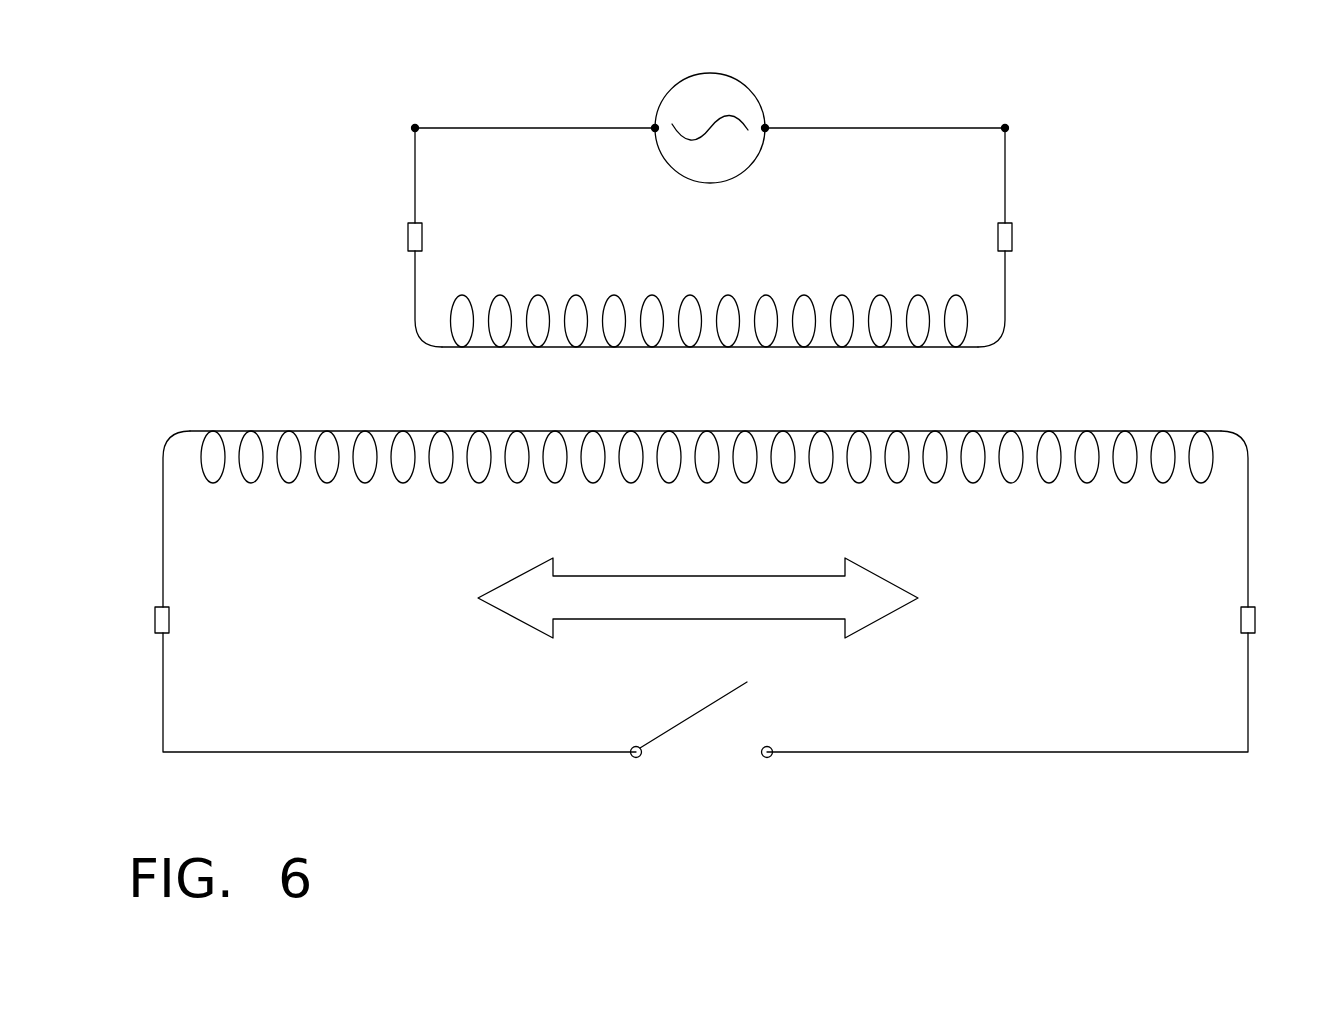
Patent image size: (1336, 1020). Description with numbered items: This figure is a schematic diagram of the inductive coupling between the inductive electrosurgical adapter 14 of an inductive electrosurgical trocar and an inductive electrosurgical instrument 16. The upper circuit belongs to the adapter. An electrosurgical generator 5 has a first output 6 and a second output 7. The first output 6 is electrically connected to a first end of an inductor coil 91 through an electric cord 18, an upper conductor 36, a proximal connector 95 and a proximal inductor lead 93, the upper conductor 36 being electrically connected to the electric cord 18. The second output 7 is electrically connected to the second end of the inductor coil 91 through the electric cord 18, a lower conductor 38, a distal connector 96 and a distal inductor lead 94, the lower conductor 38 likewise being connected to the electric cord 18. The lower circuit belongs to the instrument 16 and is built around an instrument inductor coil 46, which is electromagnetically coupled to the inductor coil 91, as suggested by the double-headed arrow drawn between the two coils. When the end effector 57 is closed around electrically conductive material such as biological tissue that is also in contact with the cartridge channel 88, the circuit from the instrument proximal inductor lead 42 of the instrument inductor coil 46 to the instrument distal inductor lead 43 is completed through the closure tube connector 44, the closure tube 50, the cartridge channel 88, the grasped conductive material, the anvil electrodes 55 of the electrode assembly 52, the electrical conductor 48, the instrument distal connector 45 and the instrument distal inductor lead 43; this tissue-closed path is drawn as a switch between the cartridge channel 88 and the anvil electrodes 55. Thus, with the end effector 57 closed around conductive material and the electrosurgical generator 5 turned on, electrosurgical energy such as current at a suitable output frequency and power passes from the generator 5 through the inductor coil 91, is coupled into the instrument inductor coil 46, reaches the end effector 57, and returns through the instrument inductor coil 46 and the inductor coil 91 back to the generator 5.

The inductive electrosurgical adapter 14 is at (1030, 57).
The inductive electrosurgical instrument 16 is at (1030, 791).
The electric cord 18 is at (537, 127).
The electrosurgical generator 5 is at (717, 88).
The first output 6 is at (768, 126).
The second output 7 is at (655, 126).
The upper conductor 36 is at (1005, 158).
The lower conductor 38 is at (415, 156).
The proximal connector 95 is at (1008, 242).
The distal connector 96 is at (410, 240).
The proximal inductor lead 93 is at (1005, 314).
The distal inductor lead 94 is at (415, 320).
The inductor coil 91 is at (597, 348).
The instrument inductor coil 46 is at (838, 432).
The instrument proximal inductor lead 42 is at (1248, 540).
The instrument distal inductor lead 43 is at (163, 536).
The closure tube connector 44 is at (1253, 622).
The instrument distal connector 45 is at (157, 616).
The electrical conductor 48 is at (163, 700).
The closure tube 50 is at (1248, 705).
The electrode assembly 52 is at (703, 708).
The anvil electrodes 55 is at (632, 757).
The cartridge channel 88 is at (770, 748).
The end effector 57 is at (709, 733).